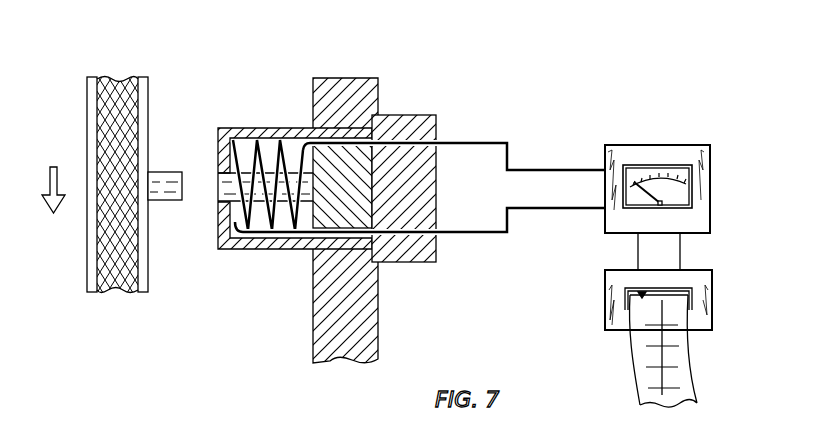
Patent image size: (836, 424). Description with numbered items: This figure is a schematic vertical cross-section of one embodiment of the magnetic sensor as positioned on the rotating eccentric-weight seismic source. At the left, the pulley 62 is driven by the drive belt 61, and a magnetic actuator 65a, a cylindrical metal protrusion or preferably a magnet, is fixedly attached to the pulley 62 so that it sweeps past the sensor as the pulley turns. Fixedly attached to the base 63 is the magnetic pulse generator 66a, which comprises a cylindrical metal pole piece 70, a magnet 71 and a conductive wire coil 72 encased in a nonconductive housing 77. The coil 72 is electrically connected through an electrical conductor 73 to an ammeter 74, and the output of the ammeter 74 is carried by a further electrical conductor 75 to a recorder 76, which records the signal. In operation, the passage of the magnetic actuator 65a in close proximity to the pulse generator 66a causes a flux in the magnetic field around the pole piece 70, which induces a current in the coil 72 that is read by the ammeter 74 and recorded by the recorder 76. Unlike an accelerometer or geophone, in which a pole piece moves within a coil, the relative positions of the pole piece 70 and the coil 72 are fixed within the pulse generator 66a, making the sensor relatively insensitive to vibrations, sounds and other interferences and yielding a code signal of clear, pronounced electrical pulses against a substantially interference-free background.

The drive belt 61 is at (113, 80).
The pulley 62 is at (148, 92).
The base 63 is at (330, 83).
The magnetic actuator 65a is at (164, 178).
The magnetic pulse generator 66a is at (404, 71).
The cylindrical metal pole piece 70 is at (228, 186).
The magnet 71 is at (338, 215).
The conductive wire coil 72 is at (258, 150).
The electrical conductor 73 is at (534, 208).
The ammeter 74 is at (712, 194).
The electrical conductor 75 is at (645, 262).
The recorder 76 is at (708, 320).
The nonconductive housing 77 is at (415, 125).